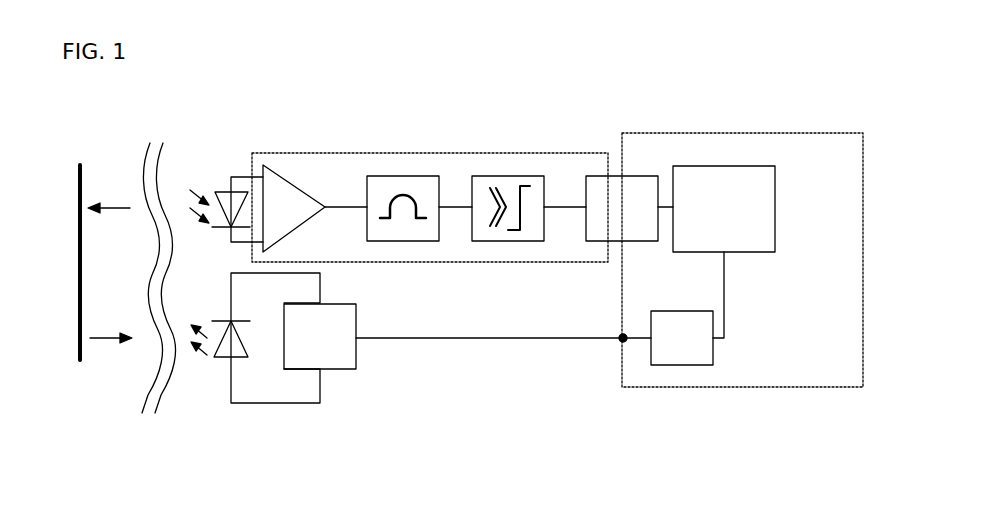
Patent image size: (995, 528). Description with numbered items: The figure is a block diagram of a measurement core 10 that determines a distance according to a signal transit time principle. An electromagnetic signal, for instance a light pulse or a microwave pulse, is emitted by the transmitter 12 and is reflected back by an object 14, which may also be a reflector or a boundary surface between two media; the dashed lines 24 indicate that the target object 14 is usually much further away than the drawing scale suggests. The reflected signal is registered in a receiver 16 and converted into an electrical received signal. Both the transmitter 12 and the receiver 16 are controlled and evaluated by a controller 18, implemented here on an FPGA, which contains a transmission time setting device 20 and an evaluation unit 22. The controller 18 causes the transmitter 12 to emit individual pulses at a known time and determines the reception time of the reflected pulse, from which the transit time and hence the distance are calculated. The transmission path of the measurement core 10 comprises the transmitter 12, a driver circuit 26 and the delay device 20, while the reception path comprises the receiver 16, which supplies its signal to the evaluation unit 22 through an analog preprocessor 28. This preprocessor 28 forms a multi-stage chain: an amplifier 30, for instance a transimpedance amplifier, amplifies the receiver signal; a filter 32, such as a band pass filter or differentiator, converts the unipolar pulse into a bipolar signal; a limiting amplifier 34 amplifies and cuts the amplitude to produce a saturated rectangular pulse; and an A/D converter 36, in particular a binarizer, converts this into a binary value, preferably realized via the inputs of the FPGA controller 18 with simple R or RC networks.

The measurement core 10 is at (477, 53).
The transmitter 12 is at (255, 363).
The object 14 is at (61, 302).
The receiver 16 is at (224, 187).
The controller 18 is at (742, 238).
The transmission time setting device 20 is at (682, 380).
The evaluation unit 22 is at (721, 178).
The dashed lines 24 is at (135, 268).
The driver circuit 26 is at (338, 356).
The analog preprocessor 28 is at (431, 171).
The amplifier 30 is at (295, 183).
The filter 32 is at (403, 177).
The limiting amplifier 34 is at (508, 177).
The A/D converter 36 is at (603, 177).